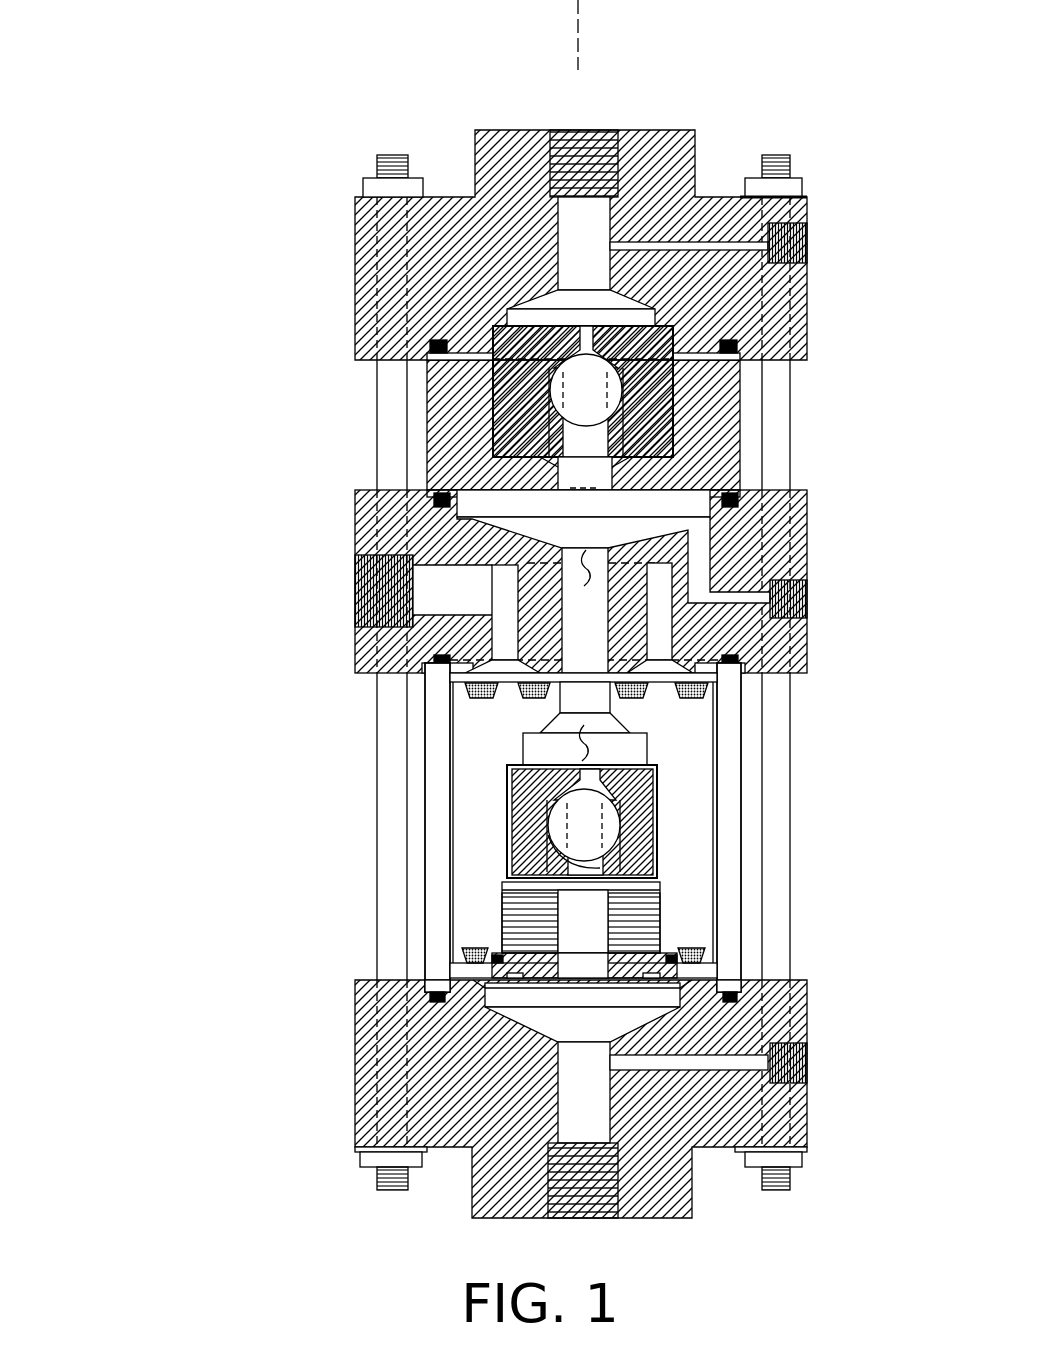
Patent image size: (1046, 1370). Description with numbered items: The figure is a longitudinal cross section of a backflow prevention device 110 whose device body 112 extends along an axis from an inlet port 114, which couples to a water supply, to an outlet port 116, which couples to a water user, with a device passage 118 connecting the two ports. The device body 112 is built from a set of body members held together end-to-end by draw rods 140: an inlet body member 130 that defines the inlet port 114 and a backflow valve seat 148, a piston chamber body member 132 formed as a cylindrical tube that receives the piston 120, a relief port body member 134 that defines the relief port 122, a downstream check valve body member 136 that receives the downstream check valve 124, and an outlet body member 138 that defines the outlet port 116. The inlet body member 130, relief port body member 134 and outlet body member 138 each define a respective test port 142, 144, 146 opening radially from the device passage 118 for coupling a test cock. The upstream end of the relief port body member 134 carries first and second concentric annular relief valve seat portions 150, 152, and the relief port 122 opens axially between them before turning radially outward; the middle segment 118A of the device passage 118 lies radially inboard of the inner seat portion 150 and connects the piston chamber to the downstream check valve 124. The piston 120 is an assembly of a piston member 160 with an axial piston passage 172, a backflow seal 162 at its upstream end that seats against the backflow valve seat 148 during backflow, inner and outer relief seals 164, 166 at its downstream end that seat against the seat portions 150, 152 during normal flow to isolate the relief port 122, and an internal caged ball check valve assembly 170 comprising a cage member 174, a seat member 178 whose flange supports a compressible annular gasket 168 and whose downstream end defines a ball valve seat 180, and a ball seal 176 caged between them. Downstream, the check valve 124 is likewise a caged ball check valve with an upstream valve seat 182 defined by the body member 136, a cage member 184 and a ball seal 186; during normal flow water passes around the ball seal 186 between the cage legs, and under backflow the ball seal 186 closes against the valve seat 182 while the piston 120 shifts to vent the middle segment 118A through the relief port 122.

The backflow prevention device 110 is at (503, 627).
The device body 112 is at (813, 1152).
The inlet port 114 is at (574, 1122).
The outlet port 116 is at (575, 213).
The device passage 118 is at (640, 1021).
The middle segment 118A is at (600, 557).
The piston 120 is at (450, 707).
The relief port 122 is at (425, 588).
The downstream check valve 124 is at (515, 385).
The inlet body member 130 is at (347, 1072).
The piston chamber body member 132 is at (437, 822).
The relief port body member 134 is at (808, 565).
The downstream check valve body member 136 is at (425, 420).
The outlet body member 138 is at (810, 272).
The draw rods 140 is at (360, 1163).
The test port 142 is at (730, 1060).
The test port 144 is at (807, 598).
The test port 146 is at (803, 240).
The backflow valve seat 148 is at (485, 990).
The inner relief valve seat portion 150 is at (637, 663).
The outer relief valve seat portion 152 is at (692, 663).
The piston member 160 is at (485, 742).
The backflow seal 162 is at (498, 940).
The inner relief seal 164 is at (647, 705).
The outer relief seal 166 is at (693, 705).
The compressible annular gasket 168 is at (475, 942).
The caged ball check valve assembly 170 is at (530, 792).
The piston passage 172 is at (590, 741).
The cage member 174 is at (608, 862).
The ball seal 176 is at (624, 828).
The seat member 178 is at (634, 932).
The ball valve seat 180 is at (614, 890).
The upstream valve seat 182 is at (623, 462).
The cage member 184 is at (614, 432).
The ball seal 186 is at (622, 390).